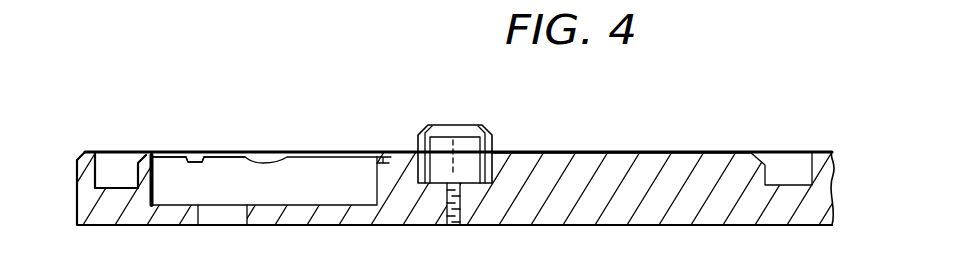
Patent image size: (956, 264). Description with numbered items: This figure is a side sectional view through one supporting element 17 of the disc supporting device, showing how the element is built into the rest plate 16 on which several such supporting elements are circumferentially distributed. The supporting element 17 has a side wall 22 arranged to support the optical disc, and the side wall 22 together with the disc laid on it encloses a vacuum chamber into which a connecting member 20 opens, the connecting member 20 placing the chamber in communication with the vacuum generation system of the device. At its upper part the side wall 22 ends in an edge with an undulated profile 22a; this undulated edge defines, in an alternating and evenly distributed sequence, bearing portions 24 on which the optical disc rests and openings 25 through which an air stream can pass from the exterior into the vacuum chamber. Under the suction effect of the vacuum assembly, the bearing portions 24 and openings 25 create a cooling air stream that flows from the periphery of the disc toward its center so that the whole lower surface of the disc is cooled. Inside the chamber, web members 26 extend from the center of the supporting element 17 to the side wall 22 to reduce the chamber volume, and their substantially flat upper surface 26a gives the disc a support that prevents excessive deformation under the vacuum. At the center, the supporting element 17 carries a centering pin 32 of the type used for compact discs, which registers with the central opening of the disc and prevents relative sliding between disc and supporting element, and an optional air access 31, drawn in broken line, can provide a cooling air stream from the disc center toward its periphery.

The rest plate 16 is at (88, 150).
The supporting element 17 is at (730, 147).
The connecting member 20 is at (295, 170).
The side wall 22 is at (150, 178).
The undulated profile 22a is at (152, 152).
The bearing portions 24 is at (238, 153).
The openings 25 is at (206, 152).
The web members 26 is at (325, 168).
The flat upper surface 26a is at (568, 151).
The air access 31 is at (415, 150).
The pin 32 is at (466, 143).